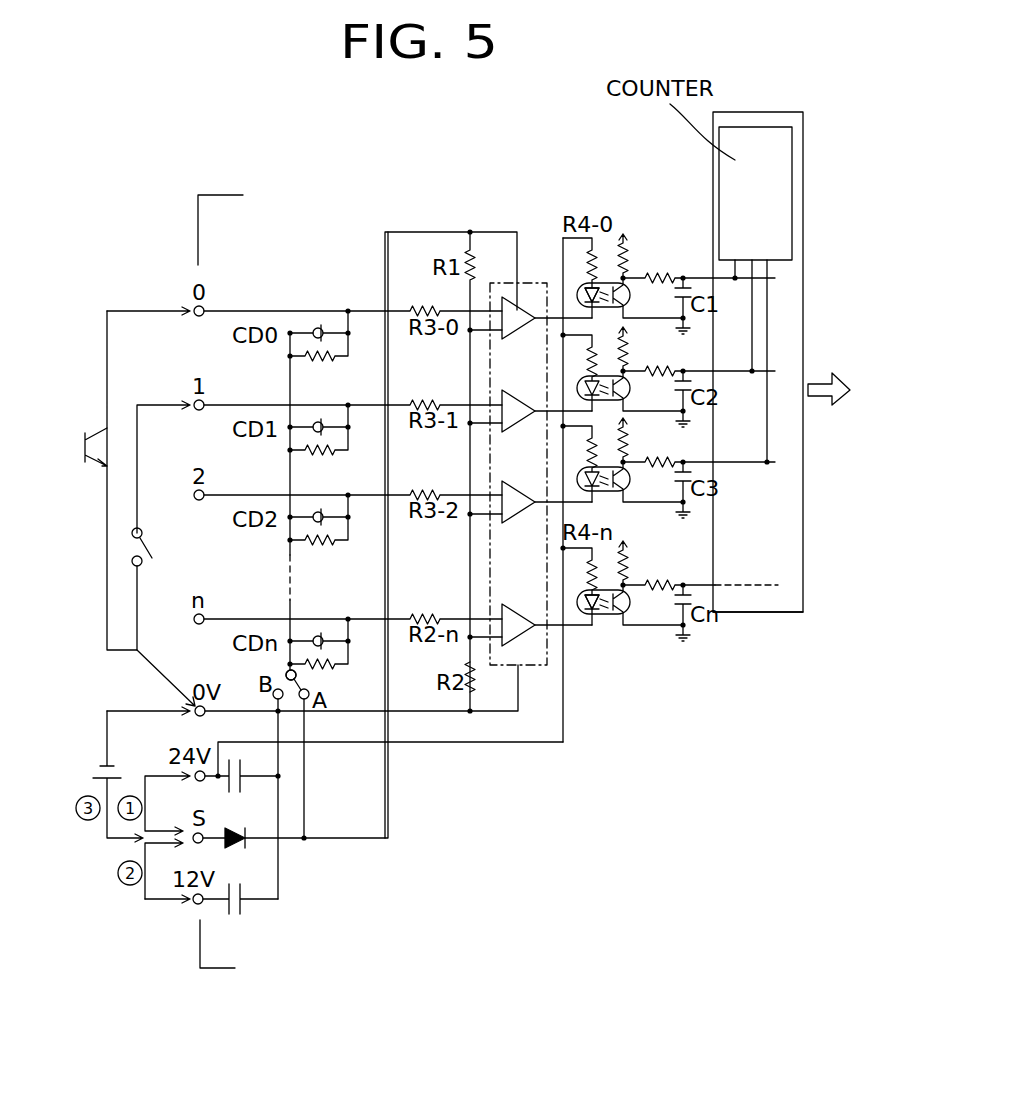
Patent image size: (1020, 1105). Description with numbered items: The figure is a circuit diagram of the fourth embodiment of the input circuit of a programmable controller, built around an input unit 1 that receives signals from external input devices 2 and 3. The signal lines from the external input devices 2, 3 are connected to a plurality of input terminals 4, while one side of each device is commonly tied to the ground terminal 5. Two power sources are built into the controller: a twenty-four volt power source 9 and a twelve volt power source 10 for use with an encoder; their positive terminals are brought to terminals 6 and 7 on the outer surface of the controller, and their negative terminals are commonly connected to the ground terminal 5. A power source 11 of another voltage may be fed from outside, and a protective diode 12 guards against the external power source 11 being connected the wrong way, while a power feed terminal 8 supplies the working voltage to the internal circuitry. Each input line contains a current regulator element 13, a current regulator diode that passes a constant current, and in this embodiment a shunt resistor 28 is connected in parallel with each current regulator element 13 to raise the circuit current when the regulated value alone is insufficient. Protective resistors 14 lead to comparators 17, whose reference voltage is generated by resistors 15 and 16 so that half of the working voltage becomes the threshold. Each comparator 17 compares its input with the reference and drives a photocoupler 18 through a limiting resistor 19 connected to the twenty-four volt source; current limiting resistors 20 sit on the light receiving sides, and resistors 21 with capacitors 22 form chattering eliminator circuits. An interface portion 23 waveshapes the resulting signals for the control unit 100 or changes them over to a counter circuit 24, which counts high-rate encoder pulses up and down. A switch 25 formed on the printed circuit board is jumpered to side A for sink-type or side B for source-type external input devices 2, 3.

The input unit 1 is at (195, 240).
The external input device 2 is at (85, 447).
The external input device 3 is at (132, 530).
The input terminals 4 is at (192, 306).
The 0 V terminal 5 is at (193, 703).
The terminal 6 is at (143, 780).
The terminal 7 is at (190, 905).
The power feed terminal 8 is at (193, 843).
The 24 V power source 9 is at (242, 788).
The 12 V power source 10 is at (245, 935).
The external power source 11 is at (95, 772).
The protective diode 12 is at (242, 905).
The current regulator element 13 is at (306, 326).
The protective resistors 14 is at (420, 300).
The resistor 15 is at (462, 275).
The resistor 16 is at (480, 680).
The comparators 17 is at (545, 280).
The photocouplers 18 is at (606, 280).
The limiting resistors 19 is at (598, 255).
The current limiting resistors 20 is at (641, 252).
The resistors 21 is at (660, 268).
The capacitors 22 is at (688, 284).
The interface portion 23 is at (795, 612).
The counter circuit 24 is at (803, 218).
The switch 25 is at (300, 674).
The shunt resistors 28 is at (292, 338).
The control unit 100 is at (832, 400).